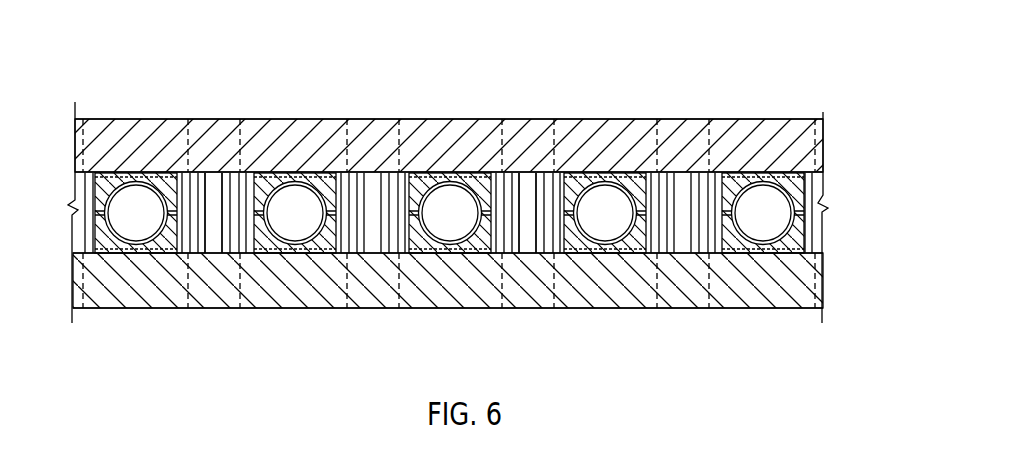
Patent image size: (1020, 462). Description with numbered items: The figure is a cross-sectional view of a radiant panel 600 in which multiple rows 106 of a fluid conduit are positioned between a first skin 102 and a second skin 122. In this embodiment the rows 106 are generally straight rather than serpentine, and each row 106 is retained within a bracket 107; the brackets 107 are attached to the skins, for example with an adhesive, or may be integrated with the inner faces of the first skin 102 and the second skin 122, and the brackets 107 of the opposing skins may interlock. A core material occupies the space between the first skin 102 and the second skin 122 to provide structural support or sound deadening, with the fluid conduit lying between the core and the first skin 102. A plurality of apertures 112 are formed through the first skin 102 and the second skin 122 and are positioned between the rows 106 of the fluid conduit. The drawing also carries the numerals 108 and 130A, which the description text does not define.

The radiant panel 600 is at (788, 32).
The first skin 102 is at (73, 290).
The second skin 122 is at (75, 125).
The rows of fluid conduit 106 is at (152, 173).
The bracket 107 is at (264, 176).
The tube 108 is at (123, 183).
The apertures 112 is at (200, 126).
The fin section 130A is at (207, 240).